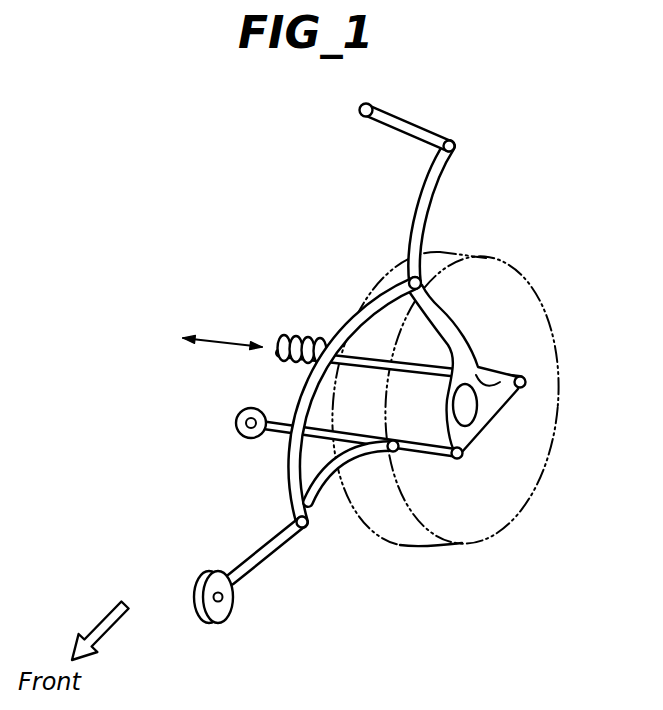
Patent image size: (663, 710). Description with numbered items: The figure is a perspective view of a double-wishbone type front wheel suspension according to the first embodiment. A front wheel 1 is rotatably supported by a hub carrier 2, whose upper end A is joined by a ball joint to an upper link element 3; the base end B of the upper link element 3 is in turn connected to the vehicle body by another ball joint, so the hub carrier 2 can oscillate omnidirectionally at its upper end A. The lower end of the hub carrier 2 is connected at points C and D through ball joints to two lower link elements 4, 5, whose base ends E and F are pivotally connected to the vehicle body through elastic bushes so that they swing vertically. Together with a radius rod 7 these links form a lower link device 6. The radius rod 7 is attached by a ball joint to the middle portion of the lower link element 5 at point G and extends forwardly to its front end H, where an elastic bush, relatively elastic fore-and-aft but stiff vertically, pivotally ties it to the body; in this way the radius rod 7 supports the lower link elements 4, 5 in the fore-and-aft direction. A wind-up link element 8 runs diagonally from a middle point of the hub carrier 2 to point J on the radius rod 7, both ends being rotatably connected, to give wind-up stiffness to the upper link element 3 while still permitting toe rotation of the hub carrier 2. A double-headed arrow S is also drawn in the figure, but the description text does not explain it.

The front wheel 1 is at (399, 279).
The hub carrier 2 is at (435, 198).
The upper link element 3 is at (418, 124).
The lower link element 4 is at (325, 366).
The lower link element 5 is at (284, 434).
The lower link device 6 is at (79, 390).
The radius rod 7 is at (262, 552).
The wind-up link element 8 is at (377, 306).
The upper end A is at (458, 144).
The base end B is at (359, 108).
The connecting point C is at (527, 383).
The connecting point D is at (463, 458).
The base end E is at (283, 343).
The base end F is at (238, 416).
The connecting point G is at (398, 440).
The front end H is at (226, 598).
The connecting point J is at (309, 528).
The steering displacement direction S is at (233, 337).